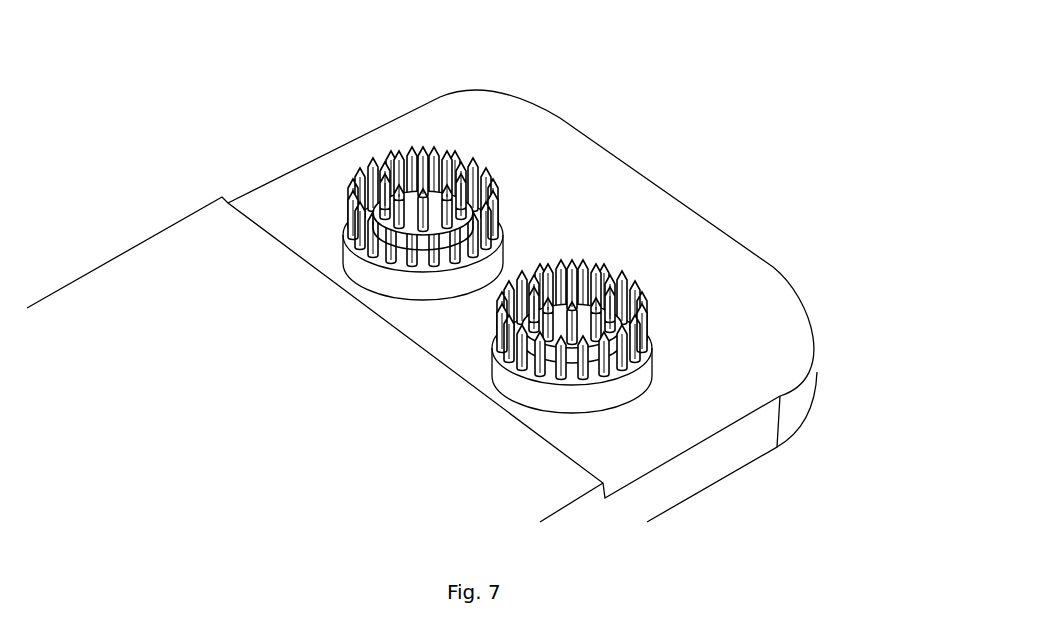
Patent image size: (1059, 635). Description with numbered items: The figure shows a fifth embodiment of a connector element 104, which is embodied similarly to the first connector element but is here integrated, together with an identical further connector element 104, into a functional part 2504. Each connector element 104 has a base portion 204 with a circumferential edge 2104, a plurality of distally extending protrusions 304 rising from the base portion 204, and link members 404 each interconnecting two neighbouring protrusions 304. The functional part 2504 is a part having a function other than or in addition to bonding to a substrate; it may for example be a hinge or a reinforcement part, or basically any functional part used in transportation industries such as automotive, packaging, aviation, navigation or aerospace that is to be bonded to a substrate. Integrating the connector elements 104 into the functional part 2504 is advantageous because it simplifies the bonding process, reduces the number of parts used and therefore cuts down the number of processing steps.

The connector element 104 is at (567, 276).
The base portion 204 is at (512, 243).
The distally extending protrusions 304 is at (564, 212).
The link members 404 is at (440, 157).
The circumferential edge 2104 is at (350, 253).
The functional part 2504 is at (205, 160).